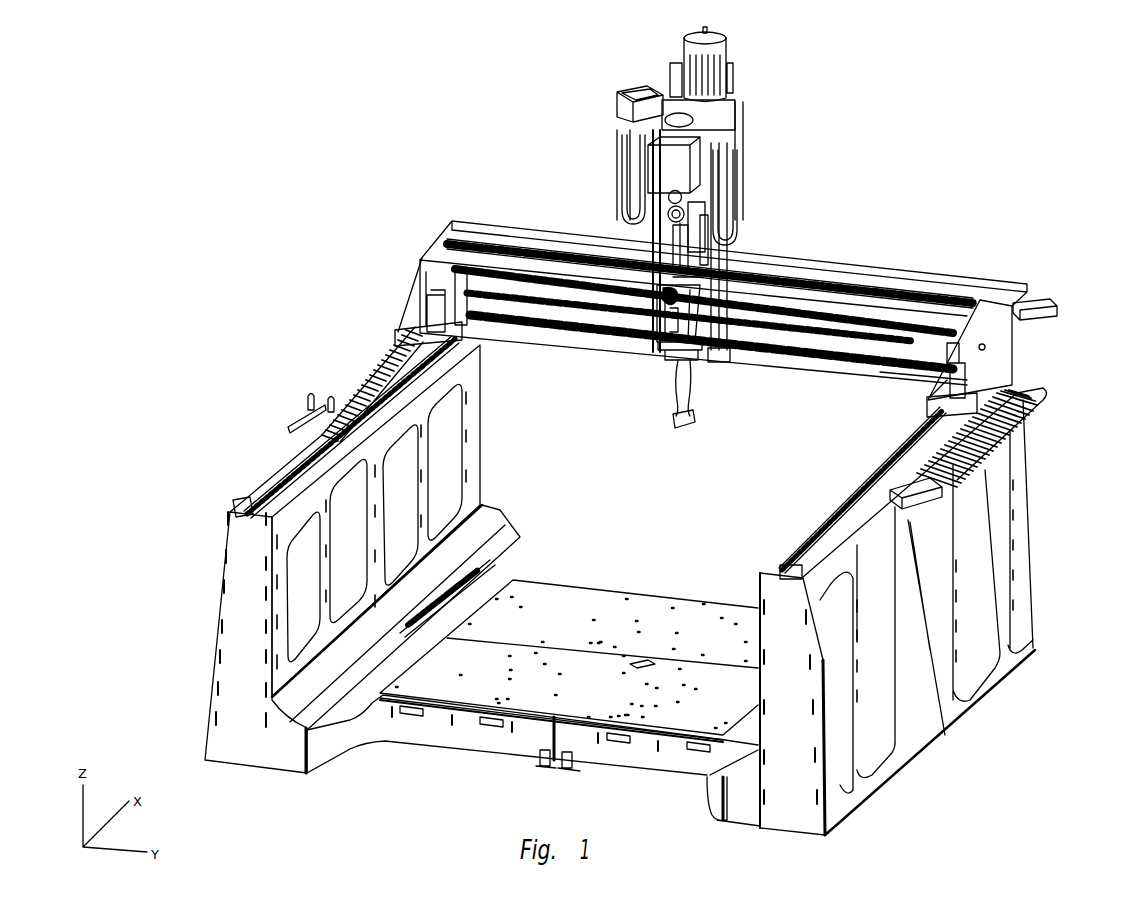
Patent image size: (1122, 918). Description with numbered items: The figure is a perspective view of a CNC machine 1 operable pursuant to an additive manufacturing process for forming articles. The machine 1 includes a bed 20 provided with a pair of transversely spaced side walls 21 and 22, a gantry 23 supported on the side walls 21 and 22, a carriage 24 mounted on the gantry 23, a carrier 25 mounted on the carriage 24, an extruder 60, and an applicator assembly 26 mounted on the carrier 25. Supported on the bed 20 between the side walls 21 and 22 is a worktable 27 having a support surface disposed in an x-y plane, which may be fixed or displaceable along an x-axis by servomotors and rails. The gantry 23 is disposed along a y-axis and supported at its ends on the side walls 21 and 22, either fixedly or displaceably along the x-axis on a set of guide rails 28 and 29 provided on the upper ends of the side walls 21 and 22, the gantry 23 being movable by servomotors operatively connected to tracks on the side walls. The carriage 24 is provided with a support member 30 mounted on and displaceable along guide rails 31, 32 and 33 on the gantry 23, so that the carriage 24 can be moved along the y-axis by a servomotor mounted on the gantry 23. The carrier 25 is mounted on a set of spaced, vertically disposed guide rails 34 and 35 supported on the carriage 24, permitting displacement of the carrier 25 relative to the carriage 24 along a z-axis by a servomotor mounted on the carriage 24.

The machine 1 is at (980, 153).
The bed 20 is at (467, 742).
The side wall 21 is at (222, 606).
The side wall 22 is at (1013, 530).
The gantry 23 is at (927, 272).
The carriage 24 is at (745, 153).
The carrier 25 is at (654, 325).
The applicator assembly 26 is at (668, 382).
The worktable 27 is at (693, 598).
The guide rail 28 is at (310, 452).
The guide rail 29 is at (837, 511).
The support member 30 is at (722, 248).
The guide rail 31 is at (857, 317).
The guide rail 32 is at (825, 345).
The guide rail 33 is at (547, 330).
The guide rail 34 is at (662, 348).
The guide rail 35 is at (713, 357).
The extruder 60 is at (687, 243).